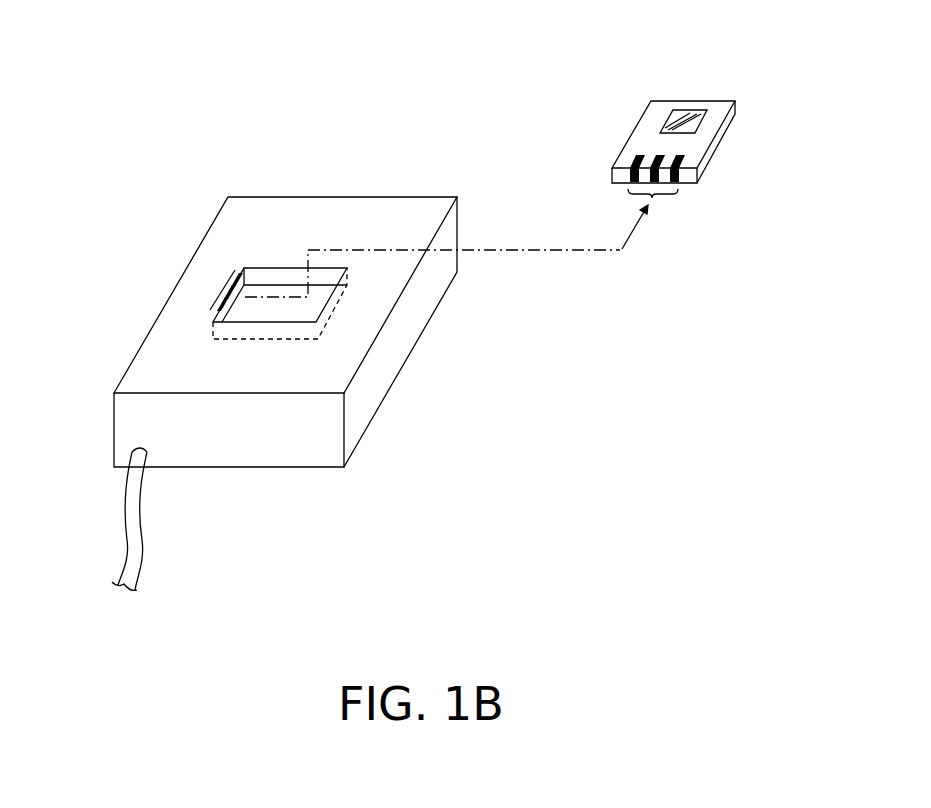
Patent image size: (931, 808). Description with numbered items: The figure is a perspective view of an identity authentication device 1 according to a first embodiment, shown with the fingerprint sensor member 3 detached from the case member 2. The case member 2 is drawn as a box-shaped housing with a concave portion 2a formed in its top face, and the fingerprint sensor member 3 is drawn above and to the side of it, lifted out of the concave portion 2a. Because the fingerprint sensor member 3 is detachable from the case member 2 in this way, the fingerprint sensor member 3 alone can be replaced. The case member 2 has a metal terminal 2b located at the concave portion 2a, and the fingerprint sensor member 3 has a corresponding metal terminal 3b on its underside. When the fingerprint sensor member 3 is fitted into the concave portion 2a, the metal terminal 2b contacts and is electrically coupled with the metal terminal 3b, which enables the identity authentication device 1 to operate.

The identity authentication device 1 is at (538, 104).
The case member 2 is at (398, 197).
The concave portion 2a is at (275, 290).
The metal terminal 2b is at (215, 288).
The fingerprint sensor member 3 is at (727, 135).
The metal terminal 3b is at (652, 200).